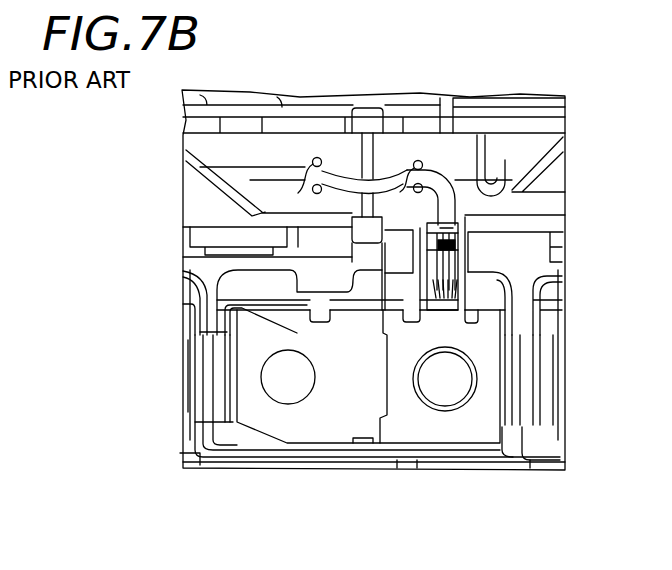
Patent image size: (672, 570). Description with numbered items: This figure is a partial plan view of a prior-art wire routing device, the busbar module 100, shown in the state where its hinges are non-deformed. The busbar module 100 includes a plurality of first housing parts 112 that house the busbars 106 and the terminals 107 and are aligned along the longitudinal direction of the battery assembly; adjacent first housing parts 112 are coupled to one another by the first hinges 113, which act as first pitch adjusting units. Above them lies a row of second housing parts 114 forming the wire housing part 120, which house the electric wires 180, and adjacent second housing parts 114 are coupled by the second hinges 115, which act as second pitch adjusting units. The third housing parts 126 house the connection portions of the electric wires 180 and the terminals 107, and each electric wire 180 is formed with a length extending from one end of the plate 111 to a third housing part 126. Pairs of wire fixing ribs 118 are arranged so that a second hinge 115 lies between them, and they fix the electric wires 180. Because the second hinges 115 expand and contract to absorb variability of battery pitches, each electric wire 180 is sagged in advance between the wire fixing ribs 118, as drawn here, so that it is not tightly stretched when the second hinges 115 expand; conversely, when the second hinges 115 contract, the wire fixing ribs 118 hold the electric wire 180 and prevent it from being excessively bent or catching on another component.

The busbar module 100 is at (533, 104).
The plate 111 is at (487, 106).
The wire housing part 120 is at (246, 104).
The second housing parts 114 is at (282, 147).
The second hinges 115 is at (367, 112).
The wire fixing ribs 118 is at (311, 187).
The electric wires 180 is at (453, 148).
The third housing parts 126 is at (473, 257).
The first hinges 113 is at (203, 413).
The busbars 106 is at (342, 433).
The terminals 107 is at (432, 437).
The first housing parts 112 is at (180, 465).